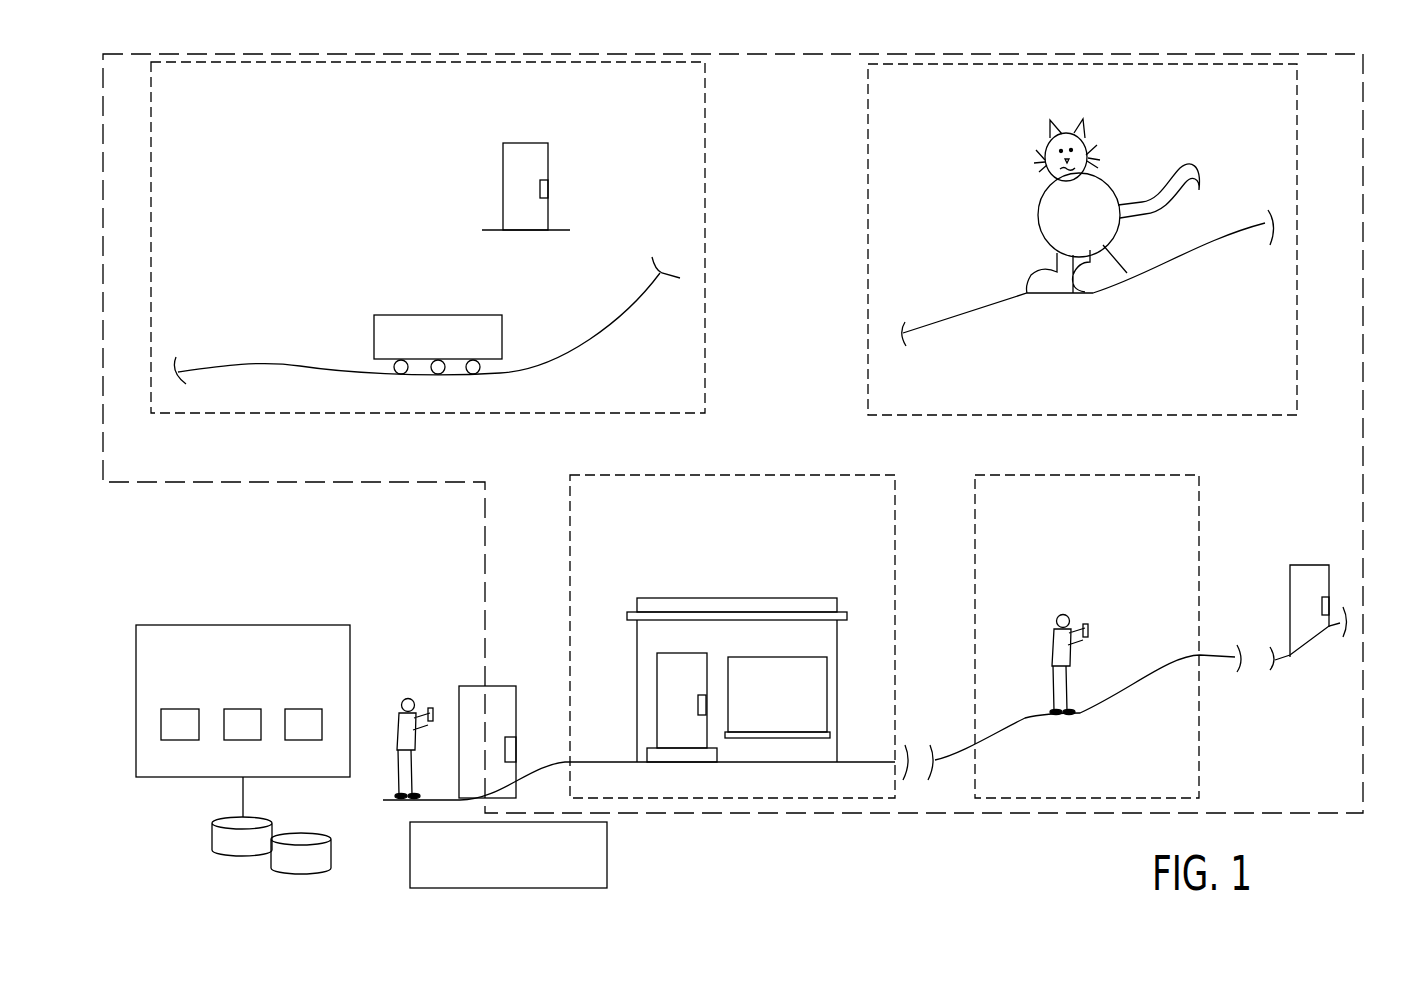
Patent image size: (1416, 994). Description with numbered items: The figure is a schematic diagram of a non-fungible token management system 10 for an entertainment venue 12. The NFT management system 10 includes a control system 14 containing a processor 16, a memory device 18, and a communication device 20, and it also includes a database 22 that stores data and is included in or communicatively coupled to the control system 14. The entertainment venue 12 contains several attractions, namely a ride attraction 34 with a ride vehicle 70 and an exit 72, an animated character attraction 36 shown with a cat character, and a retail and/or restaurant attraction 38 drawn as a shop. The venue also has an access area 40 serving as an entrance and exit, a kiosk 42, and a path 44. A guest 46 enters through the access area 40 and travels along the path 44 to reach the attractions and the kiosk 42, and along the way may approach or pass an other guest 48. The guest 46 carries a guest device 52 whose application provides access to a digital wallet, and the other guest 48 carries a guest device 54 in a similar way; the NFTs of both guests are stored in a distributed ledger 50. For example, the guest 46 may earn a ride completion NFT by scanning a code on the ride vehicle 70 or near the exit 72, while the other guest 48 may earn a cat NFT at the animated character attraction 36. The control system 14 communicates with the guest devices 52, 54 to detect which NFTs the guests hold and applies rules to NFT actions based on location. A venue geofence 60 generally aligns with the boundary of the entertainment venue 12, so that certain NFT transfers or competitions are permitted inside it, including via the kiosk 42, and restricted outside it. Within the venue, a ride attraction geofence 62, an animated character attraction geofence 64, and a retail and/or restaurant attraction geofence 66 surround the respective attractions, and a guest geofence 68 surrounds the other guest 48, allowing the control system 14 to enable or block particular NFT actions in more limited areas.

The NFT management system 10 is at (134, 848).
The entertainment venue 12 is at (1323, 828).
The control system 14 is at (243, 684).
The processor 16 is at (180, 740).
The memory device 18 is at (243, 740).
The communication device 20 is at (304, 740).
The database 22 is at (331, 866).
The ride attraction 34 is at (298, 156).
The animated character attraction 36 is at (952, 160).
The retail and/or restaurant attraction 38 is at (636, 555).
The access area 40 is at (438, 642).
The kiosk 42 is at (1320, 562).
The path 44 is at (535, 769).
The guest 46 is at (405, 698).
The other guest 48 is at (1059, 613).
The distributed ledger 50 is at (607, 853).
The guest device 52 is at (430, 708).
The guest device 54 is at (1088, 628).
The venue geofence 60 is at (940, 813).
The ride attraction geofence 62 is at (705, 237).
The animated character attraction geofence 64 is at (1297, 137).
The retail and/or restaurant attraction geofence 66 is at (730, 475).
The guest geofence 68 is at (1093, 475).
The ride vehicle 70 is at (502, 337).
The exit 72 is at (548, 158).